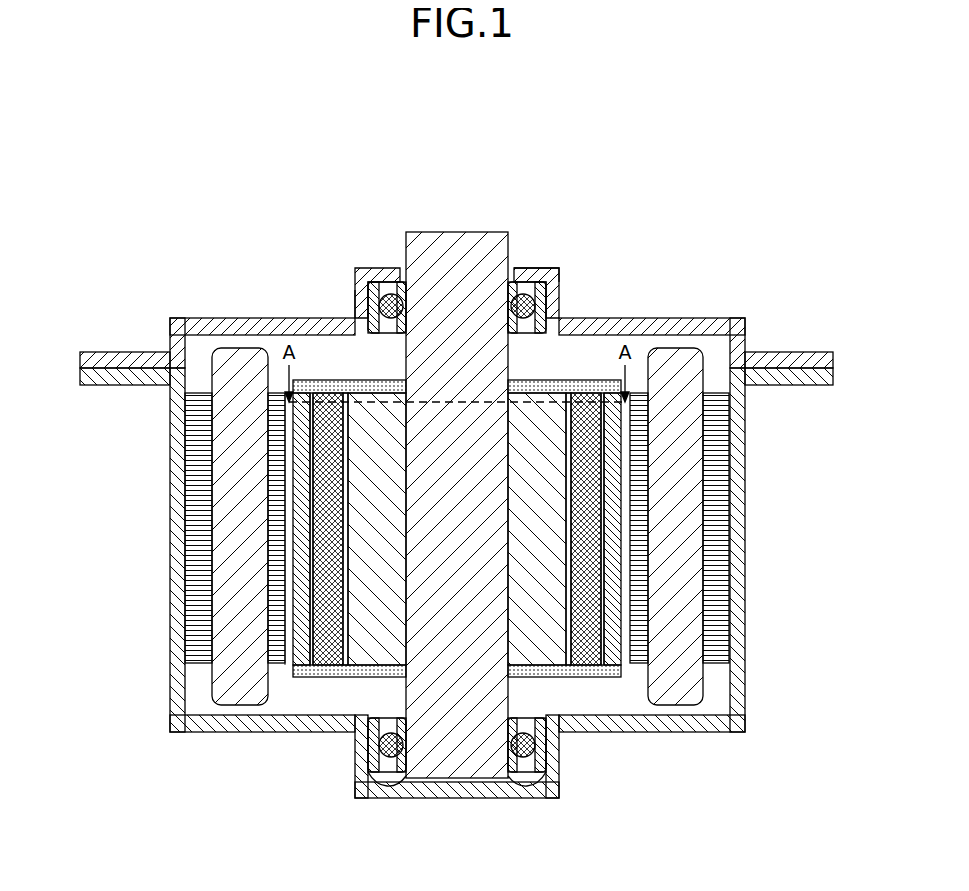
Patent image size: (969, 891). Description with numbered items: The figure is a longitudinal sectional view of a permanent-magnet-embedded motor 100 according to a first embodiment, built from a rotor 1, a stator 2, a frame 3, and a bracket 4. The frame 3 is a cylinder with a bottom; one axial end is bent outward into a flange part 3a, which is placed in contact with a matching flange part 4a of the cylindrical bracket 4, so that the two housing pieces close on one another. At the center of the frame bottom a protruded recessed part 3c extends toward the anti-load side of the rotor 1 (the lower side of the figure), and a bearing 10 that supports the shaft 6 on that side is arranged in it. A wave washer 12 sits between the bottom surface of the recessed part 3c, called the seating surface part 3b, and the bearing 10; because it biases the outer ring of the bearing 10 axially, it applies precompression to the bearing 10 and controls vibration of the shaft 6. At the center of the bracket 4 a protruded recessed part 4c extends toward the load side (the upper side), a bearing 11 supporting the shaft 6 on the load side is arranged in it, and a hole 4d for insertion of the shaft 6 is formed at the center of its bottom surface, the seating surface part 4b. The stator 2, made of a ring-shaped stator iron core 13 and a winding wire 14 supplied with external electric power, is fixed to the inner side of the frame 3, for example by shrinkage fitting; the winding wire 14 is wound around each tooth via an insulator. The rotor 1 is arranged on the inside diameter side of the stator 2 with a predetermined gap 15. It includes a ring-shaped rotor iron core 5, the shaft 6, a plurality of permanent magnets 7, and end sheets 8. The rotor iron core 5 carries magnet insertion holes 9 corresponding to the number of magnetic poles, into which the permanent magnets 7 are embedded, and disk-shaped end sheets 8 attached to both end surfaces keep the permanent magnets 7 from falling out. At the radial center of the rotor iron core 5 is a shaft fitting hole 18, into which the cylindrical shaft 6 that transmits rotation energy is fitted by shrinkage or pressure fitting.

The permanent-magnet-embedded motor 100 is at (490, 143).
The rotor 1 is at (479, 505).
The stator 2 is at (410, 526).
The frame 3 is at (463, 608).
The flange part 3a is at (820, 378).
The seating surface part 3b is at (400, 790).
The recessed part 3c is at (350, 738).
The bracket 4 is at (462, 283).
The flange part 4a is at (820, 344).
The seating surface part 4b is at (387, 262).
The recessed part 4c is at (363, 293).
The hole 4d is at (508, 243).
The rotor iron core 5 is at (552, 542).
The shaft 6 is at (488, 565).
The permanent magnet 7 is at (585, 595).
The end sheet 8 is at (595, 660).
The magnet insertion hole 9 is at (595, 625).
The bearing 10 is at (540, 737).
The bearing 11 is at (535, 284).
The wave washer 12 is at (540, 774).
The stator iron core 13 is at (207, 492).
The winding wire 14 is at (217, 528).
The gap 15 is at (292, 612).
The shaft fitting hole 18 is at (387, 642).